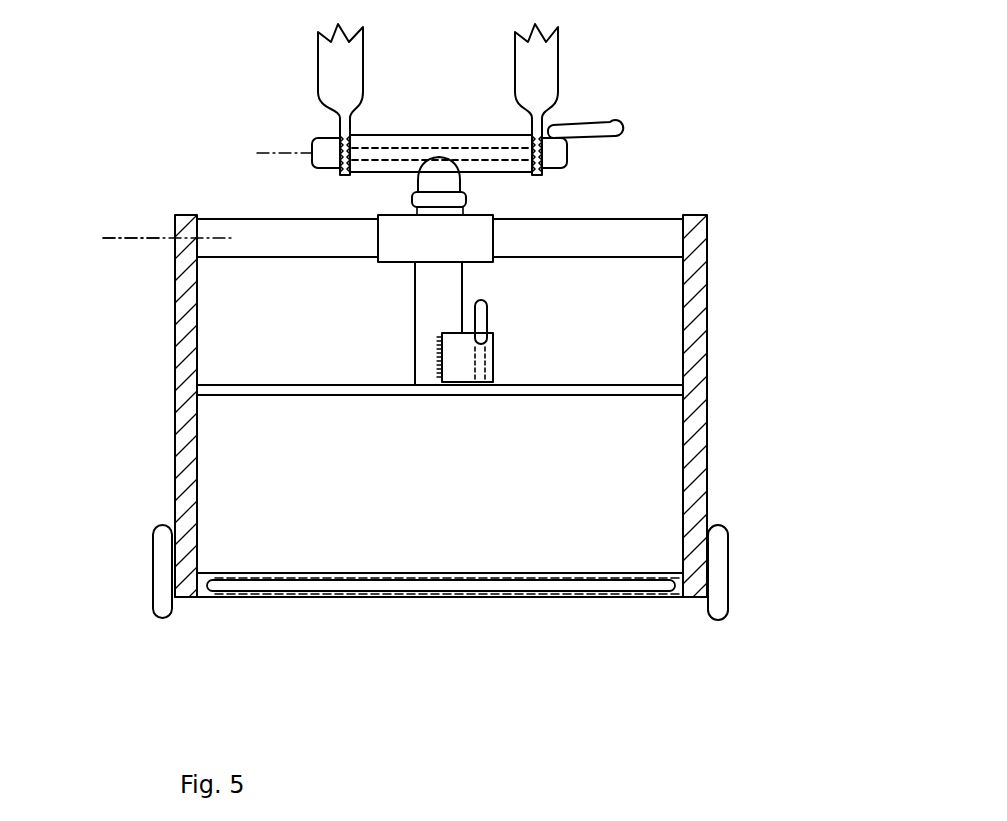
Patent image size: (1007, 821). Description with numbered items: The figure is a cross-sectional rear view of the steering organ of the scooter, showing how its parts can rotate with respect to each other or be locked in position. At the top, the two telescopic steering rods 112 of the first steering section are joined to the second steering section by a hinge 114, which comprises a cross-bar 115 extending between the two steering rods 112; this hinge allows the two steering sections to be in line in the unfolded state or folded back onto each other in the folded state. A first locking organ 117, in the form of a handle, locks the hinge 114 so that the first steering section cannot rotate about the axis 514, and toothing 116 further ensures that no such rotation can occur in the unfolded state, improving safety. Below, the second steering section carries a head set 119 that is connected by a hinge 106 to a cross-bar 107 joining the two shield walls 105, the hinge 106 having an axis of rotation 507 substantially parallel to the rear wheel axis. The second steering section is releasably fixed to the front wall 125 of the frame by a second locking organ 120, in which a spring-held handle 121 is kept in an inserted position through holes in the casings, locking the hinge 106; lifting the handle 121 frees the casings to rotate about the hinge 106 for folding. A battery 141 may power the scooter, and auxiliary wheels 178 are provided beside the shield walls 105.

The shield walls 105 is at (188, 300).
The hinge 106 is at (490, 220).
The cross-bar 107 is at (270, 232).
The telescopic steering rods 112 is at (348, 82).
The hinge 114 is at (558, 152).
The cross-bar 115 is at (395, 143).
The toothing 116 is at (528, 150).
The first locking organ 117 is at (606, 128).
The head set 119 is at (418, 200).
The second locking organ 120 is at (493, 352).
The handle 121 is at (487, 323).
The front wall 125 is at (420, 515).
The battery 141 is at (302, 585).
The auxiliary wheels 178 is at (160, 618).
The axis of rotation 507 is at (143, 237).
The axis 514 is at (290, 152).